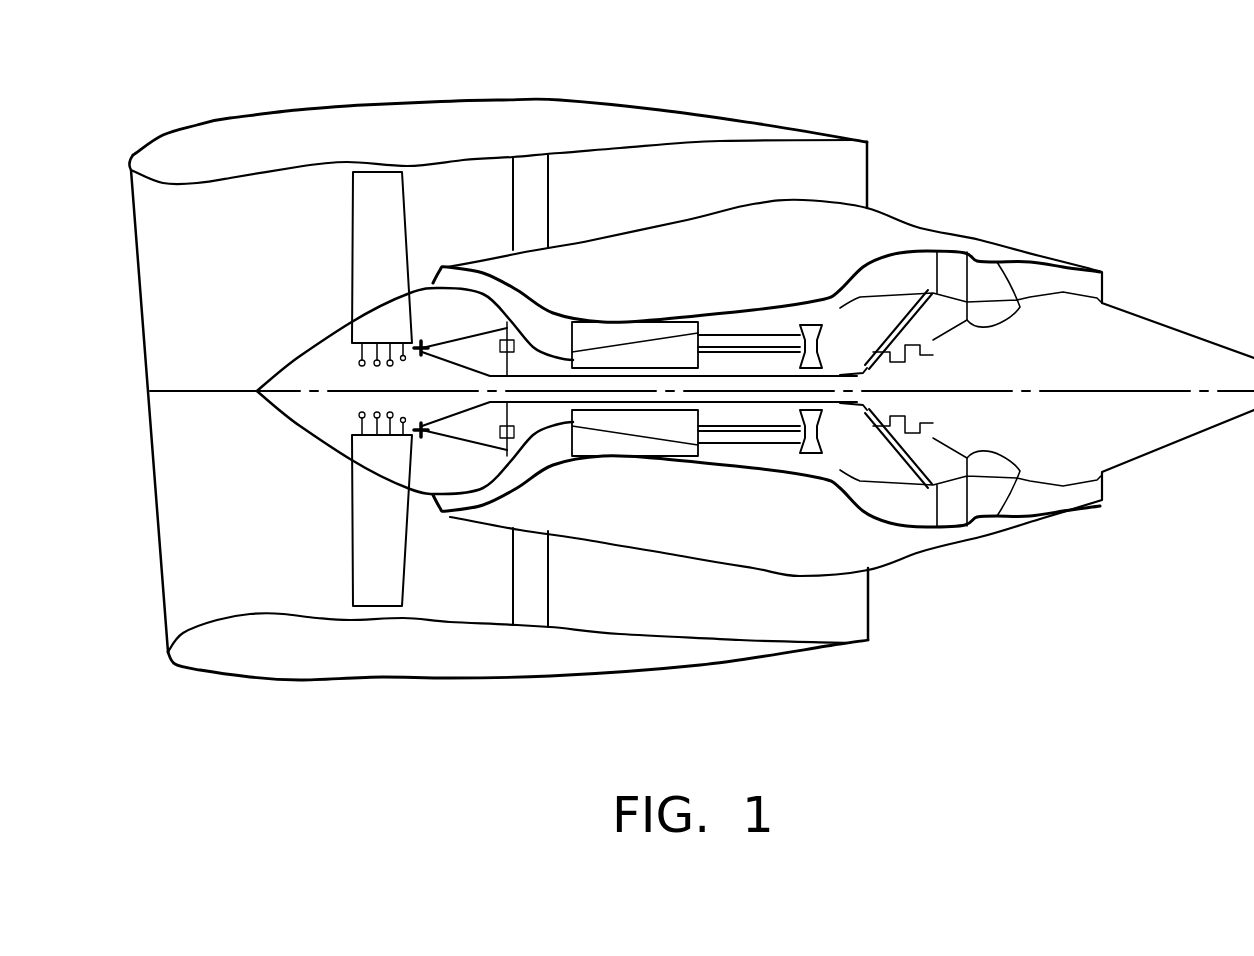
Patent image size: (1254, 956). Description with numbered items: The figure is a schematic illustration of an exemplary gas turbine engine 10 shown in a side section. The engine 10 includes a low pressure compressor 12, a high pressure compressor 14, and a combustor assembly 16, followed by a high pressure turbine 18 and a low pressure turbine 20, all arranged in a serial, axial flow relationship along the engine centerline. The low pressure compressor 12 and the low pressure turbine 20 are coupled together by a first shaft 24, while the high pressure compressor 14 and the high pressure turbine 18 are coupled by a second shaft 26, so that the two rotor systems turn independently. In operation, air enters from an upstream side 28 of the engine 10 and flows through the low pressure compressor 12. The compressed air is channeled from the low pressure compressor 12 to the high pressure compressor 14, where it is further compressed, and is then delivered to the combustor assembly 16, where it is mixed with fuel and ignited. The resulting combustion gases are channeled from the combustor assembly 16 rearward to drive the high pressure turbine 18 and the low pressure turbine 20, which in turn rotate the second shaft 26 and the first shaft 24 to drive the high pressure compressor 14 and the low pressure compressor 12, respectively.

The gas turbine engine 10 is at (770, 65).
The low pressure compressor 12 is at (368, 536).
The high pressure compressor 14 is at (593, 332).
The combustor assembly 16 is at (768, 330).
The high pressure turbine 18 is at (810, 460).
The low pressure turbine 20 is at (900, 270).
The first shaft 24 is at (766, 462).
The second shaft 26 is at (722, 378).
The upstream side 28 is at (108, 200).